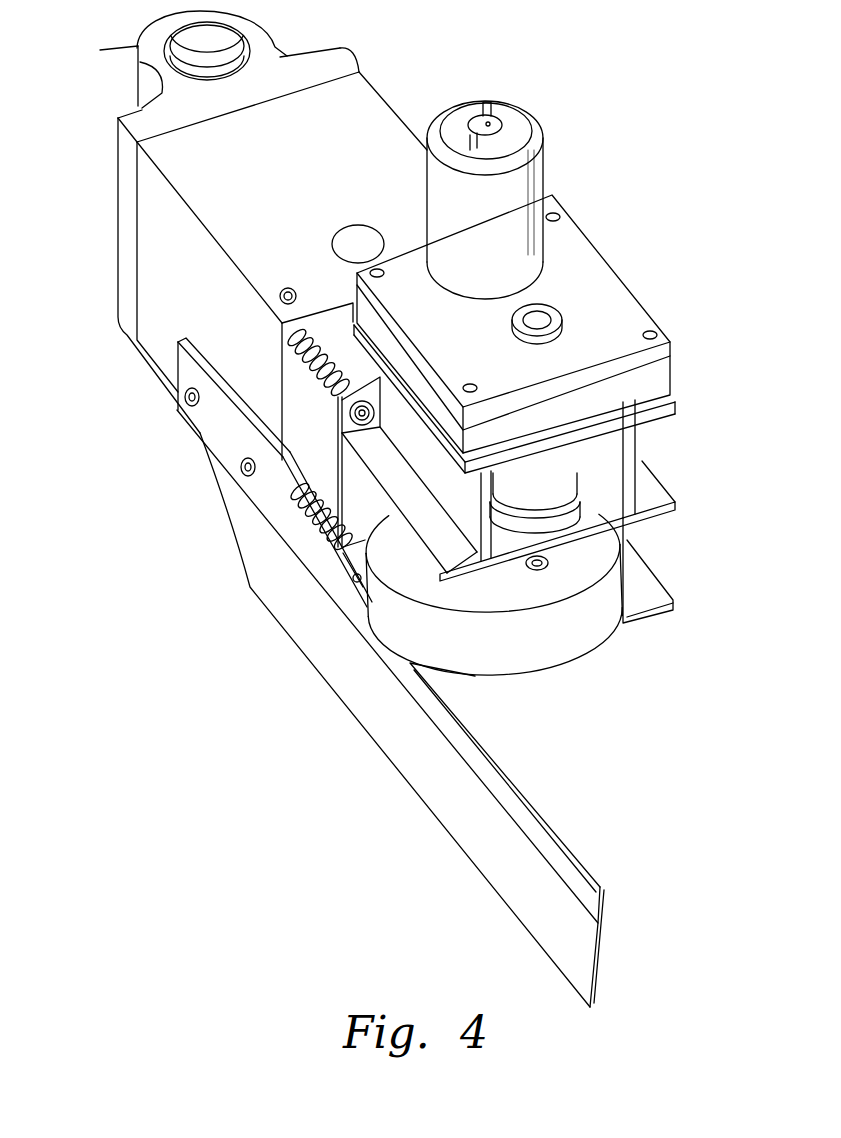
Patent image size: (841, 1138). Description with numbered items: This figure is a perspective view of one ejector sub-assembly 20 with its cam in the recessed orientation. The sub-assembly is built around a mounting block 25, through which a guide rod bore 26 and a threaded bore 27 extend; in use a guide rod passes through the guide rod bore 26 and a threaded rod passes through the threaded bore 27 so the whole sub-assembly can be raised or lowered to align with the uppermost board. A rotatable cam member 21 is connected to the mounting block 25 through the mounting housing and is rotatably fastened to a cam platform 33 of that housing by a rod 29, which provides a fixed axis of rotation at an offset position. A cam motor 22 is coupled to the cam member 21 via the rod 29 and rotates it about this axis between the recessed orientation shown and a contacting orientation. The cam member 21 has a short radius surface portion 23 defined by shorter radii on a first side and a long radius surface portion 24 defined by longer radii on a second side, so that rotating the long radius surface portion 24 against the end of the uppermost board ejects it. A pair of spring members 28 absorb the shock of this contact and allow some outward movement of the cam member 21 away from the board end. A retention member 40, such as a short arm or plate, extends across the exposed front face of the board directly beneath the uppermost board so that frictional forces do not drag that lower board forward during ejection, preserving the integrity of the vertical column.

The ejector sub-assembly 20 is at (136, 453).
The rotatable cam member 21 is at (603, 552).
The cam motor 22 is at (517, 200).
The short radius surface portion 23 is at (587, 633).
The long radius surface portion 24 is at (390, 605).
The mounting block 25 is at (160, 248).
The guide rod bore 26 is at (362, 225).
The threaded bore 27 is at (150, 46).
The spring members 28 is at (325, 487).
The rod 29 is at (563, 474).
The cam platform 33 is at (643, 603).
The retention member 40 is at (450, 782).